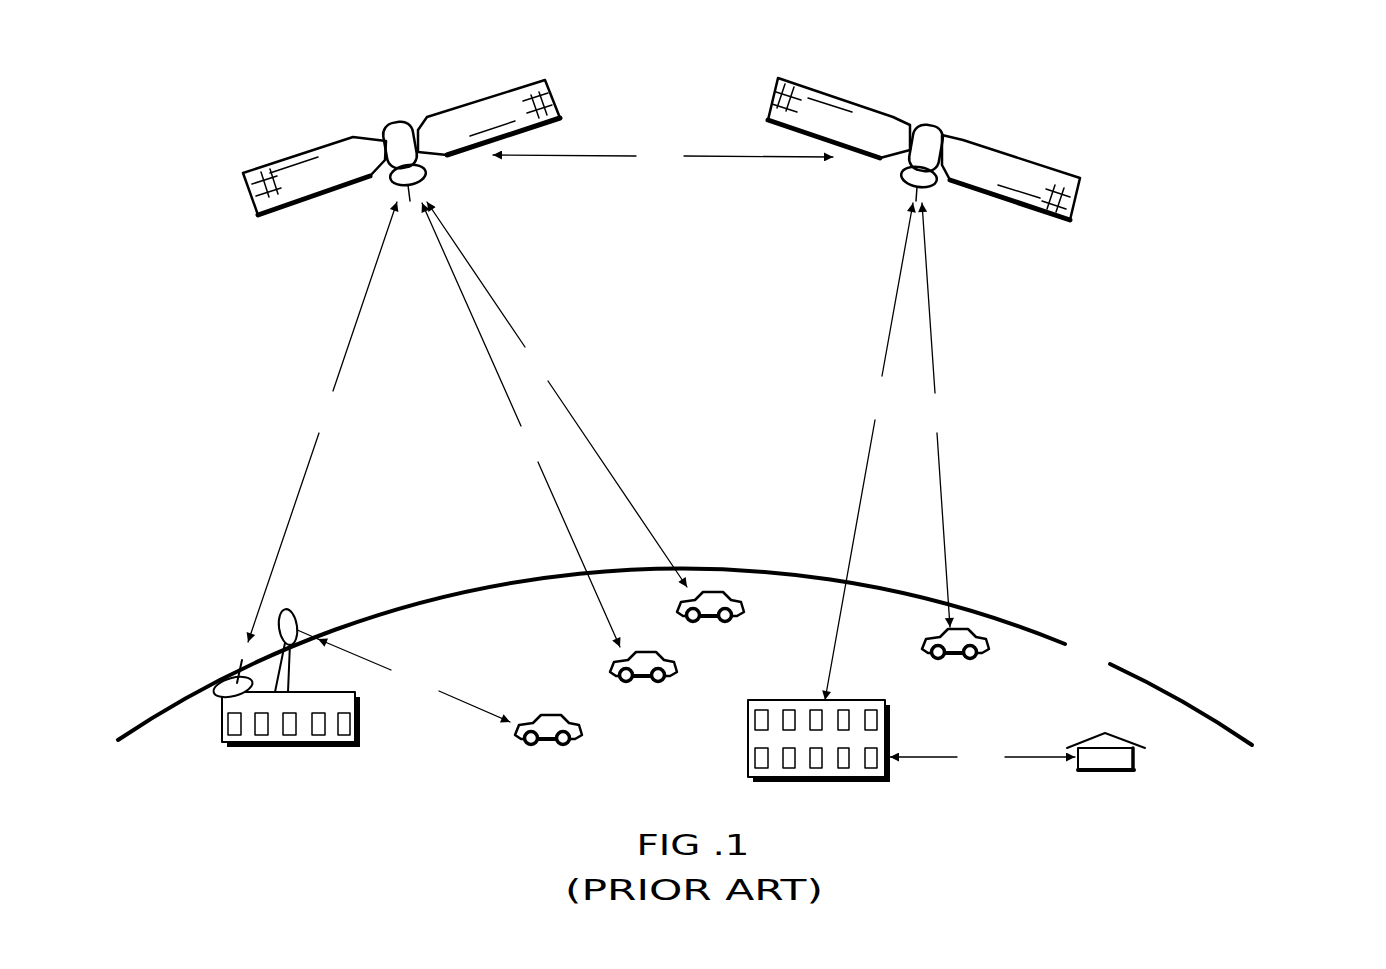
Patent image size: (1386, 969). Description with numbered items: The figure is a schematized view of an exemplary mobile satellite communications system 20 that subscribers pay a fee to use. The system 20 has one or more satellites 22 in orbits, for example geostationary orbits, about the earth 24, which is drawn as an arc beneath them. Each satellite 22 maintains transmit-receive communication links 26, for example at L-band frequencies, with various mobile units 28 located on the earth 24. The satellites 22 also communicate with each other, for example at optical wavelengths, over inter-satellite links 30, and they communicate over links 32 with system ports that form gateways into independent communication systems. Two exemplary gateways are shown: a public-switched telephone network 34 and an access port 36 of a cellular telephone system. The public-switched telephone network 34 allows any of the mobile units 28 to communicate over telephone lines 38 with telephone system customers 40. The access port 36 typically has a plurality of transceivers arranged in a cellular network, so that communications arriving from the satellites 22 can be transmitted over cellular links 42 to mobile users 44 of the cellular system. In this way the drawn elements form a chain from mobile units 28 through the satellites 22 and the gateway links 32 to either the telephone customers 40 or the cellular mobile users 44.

The mobile communication system 20 is at (1143, 343).
The satellite 22 is at (462, 107).
The earth 24 is at (685, 657).
The transmit-receive communication link 26 is at (686, 424).
The mobile unit 28 is at (638, 683).
The inter-satellite link 30 is at (663, 157).
The gateway link 32 is at (580, 451).
The public-switched telephone network 34 is at (748, 750).
The access port 36 is at (356, 724).
The telephone lines 38 is at (982, 758).
The telephone system customer 40 is at (1134, 762).
The cellular link 42 is at (402, 675).
The mobile user 44 is at (546, 746).